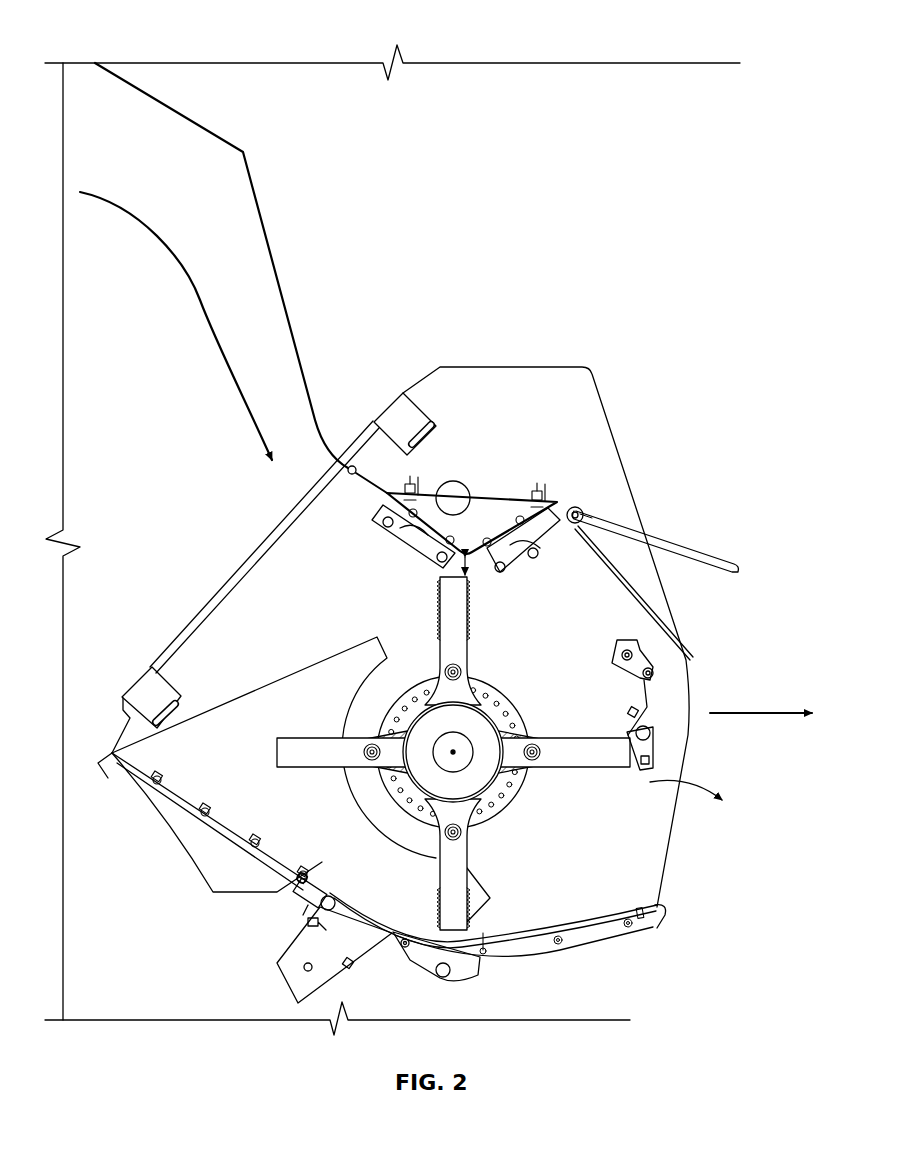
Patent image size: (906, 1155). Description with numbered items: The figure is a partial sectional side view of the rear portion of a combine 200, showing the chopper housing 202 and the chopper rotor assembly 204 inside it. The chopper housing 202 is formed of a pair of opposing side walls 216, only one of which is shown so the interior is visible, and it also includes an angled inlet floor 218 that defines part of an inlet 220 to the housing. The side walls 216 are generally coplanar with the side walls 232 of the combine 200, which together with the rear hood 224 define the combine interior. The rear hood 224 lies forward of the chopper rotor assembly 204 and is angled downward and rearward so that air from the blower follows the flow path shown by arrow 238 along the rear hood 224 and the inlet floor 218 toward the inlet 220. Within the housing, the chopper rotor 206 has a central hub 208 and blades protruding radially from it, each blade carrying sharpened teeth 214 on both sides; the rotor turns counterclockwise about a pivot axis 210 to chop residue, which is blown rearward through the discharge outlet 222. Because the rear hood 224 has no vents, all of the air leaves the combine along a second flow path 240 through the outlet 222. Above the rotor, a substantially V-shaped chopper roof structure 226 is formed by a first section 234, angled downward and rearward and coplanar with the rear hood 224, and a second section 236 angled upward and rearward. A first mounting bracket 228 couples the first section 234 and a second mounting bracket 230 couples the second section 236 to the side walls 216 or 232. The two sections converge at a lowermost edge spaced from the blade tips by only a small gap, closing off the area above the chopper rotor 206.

The combine 200 is at (712, 50).
The chopper housing 202 is at (540, 942).
The chopper rotor assembly 204 is at (640, 811).
The chopper rotor 206 is at (497, 777).
The central hub 208 is at (428, 780).
The pivot axis 210 is at (448, 793).
The teeth 214 is at (401, 955).
The side walls 216 is at (573, 669).
The inlet floor 218 is at (329, 883).
The inlet 220 is at (296, 614).
The discharge outlet 222 is at (700, 797).
The rear hood 224 is at (207, 125).
The chopper roof structure 226 is at (490, 510).
The first mounting bracket 228 is at (404, 558).
The second mounting bracket 230 is at (503, 553).
The side walls 232 is at (505, 229).
The first section 234 is at (433, 530).
The second section 236 is at (540, 523).
The arrow 238 is at (190, 278).
The second flow path 240 is at (742, 712).